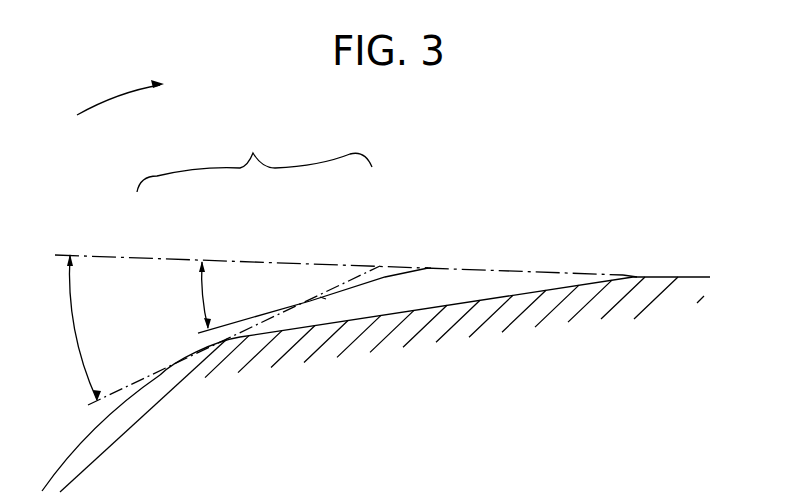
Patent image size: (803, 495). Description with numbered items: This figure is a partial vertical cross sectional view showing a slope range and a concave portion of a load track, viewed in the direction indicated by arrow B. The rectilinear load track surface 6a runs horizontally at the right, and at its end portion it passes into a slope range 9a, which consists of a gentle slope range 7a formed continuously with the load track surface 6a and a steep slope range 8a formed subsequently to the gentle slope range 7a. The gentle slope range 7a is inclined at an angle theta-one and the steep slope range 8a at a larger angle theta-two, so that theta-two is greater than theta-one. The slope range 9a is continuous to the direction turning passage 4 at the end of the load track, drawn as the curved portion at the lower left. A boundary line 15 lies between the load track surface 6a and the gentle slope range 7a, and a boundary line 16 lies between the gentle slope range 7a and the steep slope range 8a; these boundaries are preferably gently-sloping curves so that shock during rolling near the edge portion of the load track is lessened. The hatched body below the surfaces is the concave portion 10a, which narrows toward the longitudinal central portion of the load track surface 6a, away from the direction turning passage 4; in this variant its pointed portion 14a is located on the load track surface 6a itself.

The view direction arrow B is at (120, 92).
The direction turning passage 4 is at (78, 444).
The load track surface 6a is at (680, 277).
The gentle slope range 7a is at (383, 280).
The steep slope range 8a is at (183, 363).
The slope range 9a is at (254, 160).
The concave portion 10a is at (452, 305).
The pointed portion 14a is at (637, 275).
The boundary line 15 is at (428, 268).
The boundary line 16 is at (323, 298).